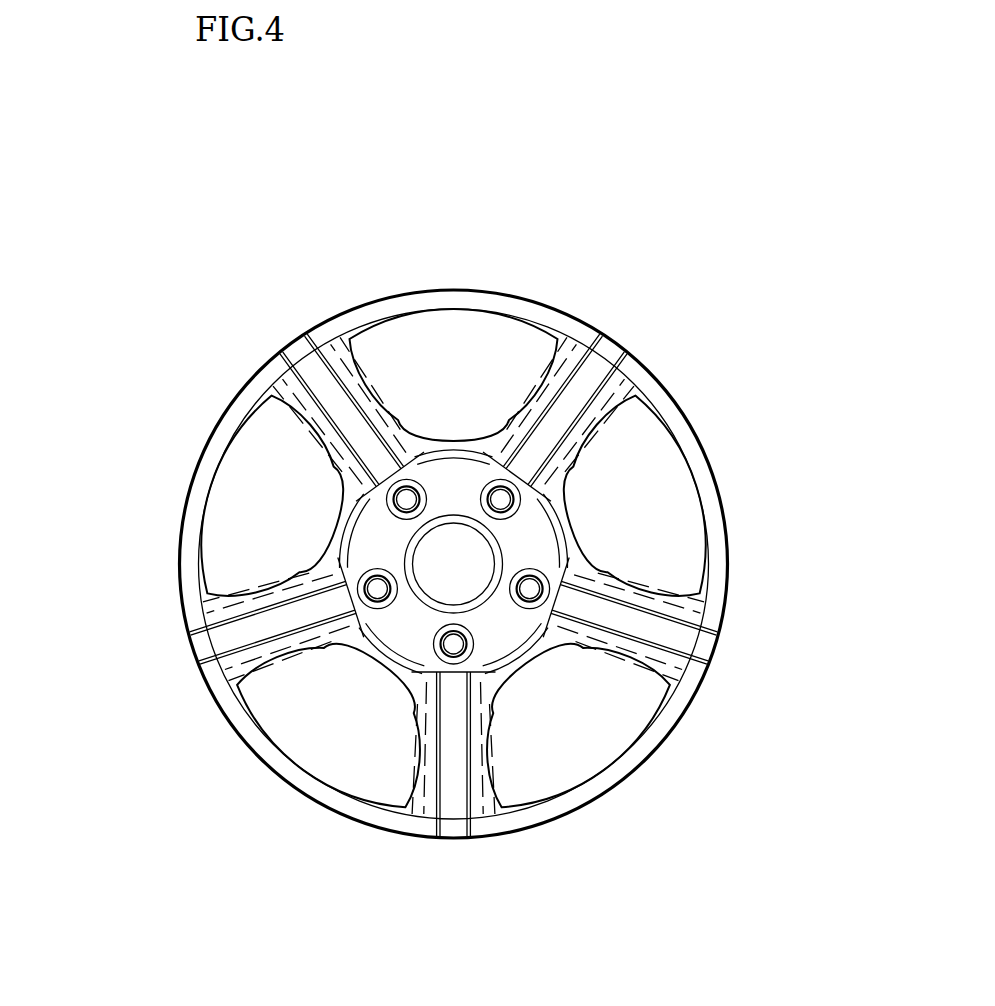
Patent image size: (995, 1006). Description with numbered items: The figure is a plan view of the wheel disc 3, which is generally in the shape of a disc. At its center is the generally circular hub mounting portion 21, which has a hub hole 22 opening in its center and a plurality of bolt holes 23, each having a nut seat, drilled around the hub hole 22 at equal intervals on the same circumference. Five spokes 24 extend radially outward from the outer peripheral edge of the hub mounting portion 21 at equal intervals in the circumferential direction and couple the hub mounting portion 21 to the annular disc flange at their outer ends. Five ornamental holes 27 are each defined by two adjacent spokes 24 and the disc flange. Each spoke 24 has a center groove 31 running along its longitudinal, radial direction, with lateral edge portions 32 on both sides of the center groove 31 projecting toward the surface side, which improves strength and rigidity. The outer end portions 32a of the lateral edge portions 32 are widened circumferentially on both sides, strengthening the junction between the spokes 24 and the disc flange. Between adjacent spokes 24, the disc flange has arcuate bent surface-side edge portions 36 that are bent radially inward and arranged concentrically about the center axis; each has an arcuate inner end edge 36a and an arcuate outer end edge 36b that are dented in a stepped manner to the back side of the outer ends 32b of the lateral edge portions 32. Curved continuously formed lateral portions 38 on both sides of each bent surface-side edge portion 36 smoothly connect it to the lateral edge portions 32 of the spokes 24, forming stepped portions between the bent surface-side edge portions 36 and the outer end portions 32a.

The wheel disc 3 is at (162, 343).
The hub mounting portion 21 is at (412, 625).
The hub hole 22 is at (432, 575).
The bolt holes 23 is at (407, 500).
The spokes 24 is at (626, 346).
The ornamental holes 27 is at (505, 327).
The center groove 31 is at (295, 358).
The lateral edge portions 32 is at (358, 372).
The outer end portions 32a is at (345, 321).
The outer ends 32b is at (322, 350).
The bent surface-side edge portions 36 is at (433, 300).
The arcuate inner end edge 36a is at (467, 310).
The arcuate outer end edge 36b is at (468, 287).
The continuously formed lateral portions 38 is at (362, 312).